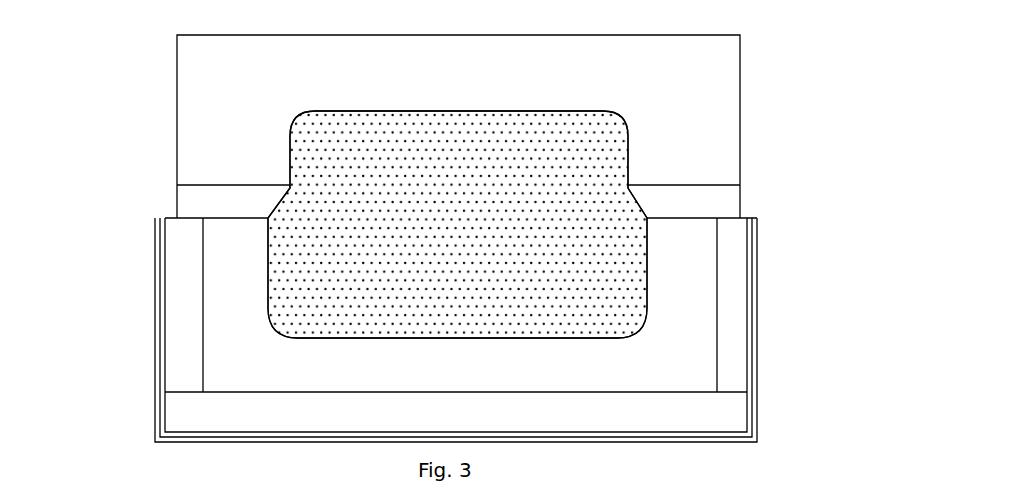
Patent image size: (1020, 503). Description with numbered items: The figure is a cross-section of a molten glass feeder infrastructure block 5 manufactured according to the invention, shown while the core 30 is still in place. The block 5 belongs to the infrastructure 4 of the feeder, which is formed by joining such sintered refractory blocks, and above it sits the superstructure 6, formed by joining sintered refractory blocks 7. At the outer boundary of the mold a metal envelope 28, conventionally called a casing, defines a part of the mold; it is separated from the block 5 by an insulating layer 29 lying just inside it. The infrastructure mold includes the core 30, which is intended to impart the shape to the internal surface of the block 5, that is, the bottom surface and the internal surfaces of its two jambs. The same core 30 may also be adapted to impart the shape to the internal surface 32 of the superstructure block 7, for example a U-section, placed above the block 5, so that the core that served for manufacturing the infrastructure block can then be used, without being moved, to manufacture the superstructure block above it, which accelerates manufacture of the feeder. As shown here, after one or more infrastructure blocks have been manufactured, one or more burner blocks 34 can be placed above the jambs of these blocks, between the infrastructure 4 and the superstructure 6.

The sintered refractory block 7 is at (677, 55).
The superstructure 6 is at (694, 87).
The internal surface of the superstructure block 32 is at (630, 133).
The core 30 is at (587, 157).
The burner block 34 is at (700, 194).
The infrastructure 4 is at (694, 316).
The infrastructure block 5 is at (678, 370).
The insulating layer 29 is at (177, 274).
The metal envelope 28 is at (160, 342).